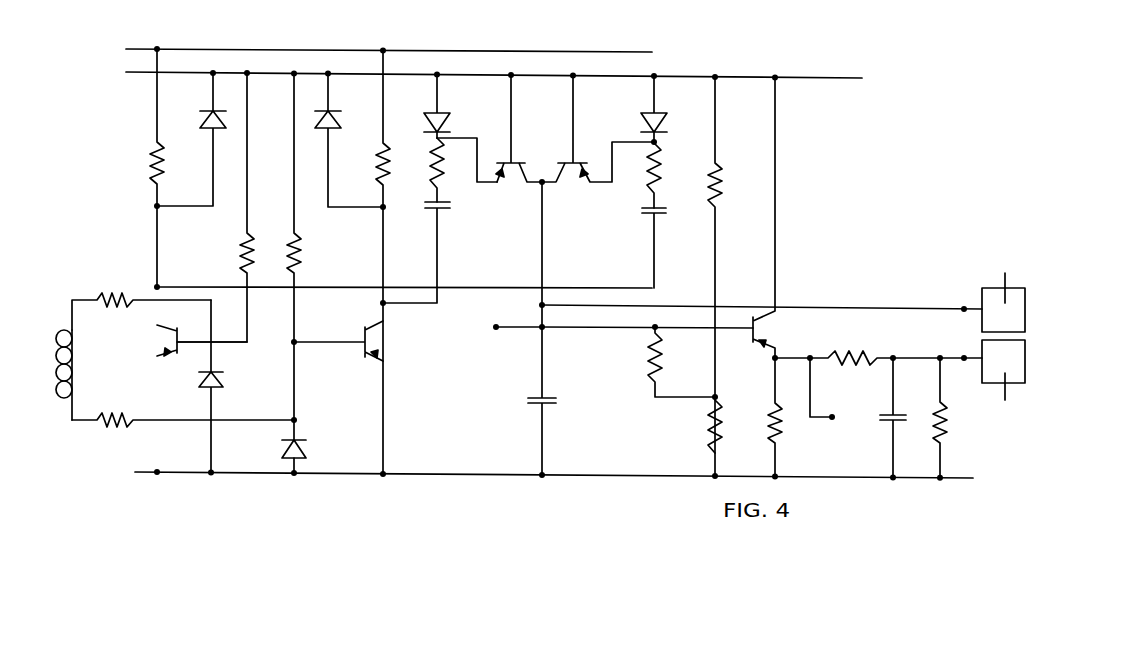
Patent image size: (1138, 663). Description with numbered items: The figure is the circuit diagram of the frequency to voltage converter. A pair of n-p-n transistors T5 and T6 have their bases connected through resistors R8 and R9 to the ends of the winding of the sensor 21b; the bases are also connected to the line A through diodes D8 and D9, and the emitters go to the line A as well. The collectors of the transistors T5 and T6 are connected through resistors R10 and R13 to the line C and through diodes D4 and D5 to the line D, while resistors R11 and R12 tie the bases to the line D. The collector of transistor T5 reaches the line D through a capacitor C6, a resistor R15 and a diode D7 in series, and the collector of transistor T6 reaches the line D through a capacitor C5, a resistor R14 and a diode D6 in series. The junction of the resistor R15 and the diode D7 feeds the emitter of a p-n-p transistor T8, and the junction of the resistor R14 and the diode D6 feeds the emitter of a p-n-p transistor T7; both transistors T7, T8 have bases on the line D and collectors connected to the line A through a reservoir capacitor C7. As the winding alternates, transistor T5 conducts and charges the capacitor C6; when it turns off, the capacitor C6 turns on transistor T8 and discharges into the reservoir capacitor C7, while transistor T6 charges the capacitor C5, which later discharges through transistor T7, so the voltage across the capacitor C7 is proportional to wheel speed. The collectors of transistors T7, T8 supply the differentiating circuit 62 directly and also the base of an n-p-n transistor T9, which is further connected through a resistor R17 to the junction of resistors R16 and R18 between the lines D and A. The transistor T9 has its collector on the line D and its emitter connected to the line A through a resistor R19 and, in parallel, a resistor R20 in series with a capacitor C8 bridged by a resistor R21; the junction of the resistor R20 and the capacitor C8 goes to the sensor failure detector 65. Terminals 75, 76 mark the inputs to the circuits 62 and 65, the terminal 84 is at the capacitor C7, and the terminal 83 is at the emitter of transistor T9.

The diode D4 is at (207, 109).
The diode D5 is at (318, 109).
The diode D6 is at (427, 112).
The diode D7 is at (648, 118).
The diode D8 is at (225, 382).
The diode D9 is at (305, 443).
The resistor R8 is at (133, 298).
The resistor R9 is at (110, 427).
The resistor R10 is at (152, 156).
The resistor R11 is at (240, 243).
The resistor R12 is at (300, 260).
The resistor R13 is at (378, 172).
The resistor R14 is at (432, 177).
The resistor R15 is at (648, 190).
The resistor R16 is at (728, 183).
The resistor R17 is at (648, 375).
The resistor R18 is at (705, 432).
The resistor R19 is at (777, 437).
The resistor R20 is at (852, 358).
The resistor R21 is at (943, 423).
The capacitor C5 is at (450, 204).
The capacitor C6 is at (642, 210).
The reservoir capacitor C7 is at (525, 402).
The capacitor C8 is at (877, 422).
The n-p-n transistor T5 is at (166, 338).
The n-p-n transistor T6 is at (377, 343).
The p-n-p transistor T7 is at (498, 158).
The p-n-p transistor T8 is at (563, 158).
The n-p-n transistor T9 is at (768, 323).
The sensor 21b is at (64, 398).
The differentiating circuit 62 is at (1048, 238).
The sensor failure detector 65 is at (1042, 369).
The terminal 75 is at (963, 306).
The terminal 76 is at (963, 355).
The terminal 83 is at (836, 414).
The terminal 84 is at (496, 330).
The line A is at (413, 475).
The line C is at (548, 50).
The line D is at (672, 76).